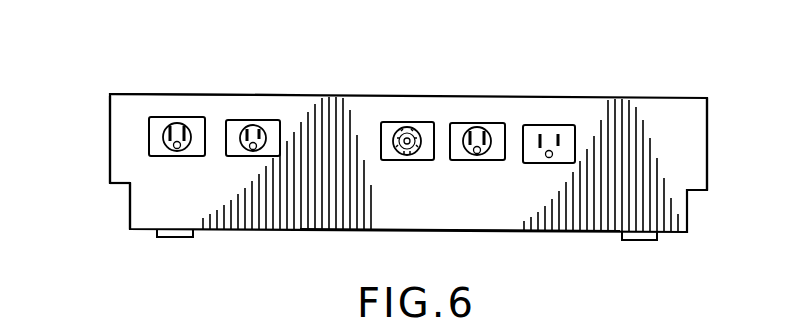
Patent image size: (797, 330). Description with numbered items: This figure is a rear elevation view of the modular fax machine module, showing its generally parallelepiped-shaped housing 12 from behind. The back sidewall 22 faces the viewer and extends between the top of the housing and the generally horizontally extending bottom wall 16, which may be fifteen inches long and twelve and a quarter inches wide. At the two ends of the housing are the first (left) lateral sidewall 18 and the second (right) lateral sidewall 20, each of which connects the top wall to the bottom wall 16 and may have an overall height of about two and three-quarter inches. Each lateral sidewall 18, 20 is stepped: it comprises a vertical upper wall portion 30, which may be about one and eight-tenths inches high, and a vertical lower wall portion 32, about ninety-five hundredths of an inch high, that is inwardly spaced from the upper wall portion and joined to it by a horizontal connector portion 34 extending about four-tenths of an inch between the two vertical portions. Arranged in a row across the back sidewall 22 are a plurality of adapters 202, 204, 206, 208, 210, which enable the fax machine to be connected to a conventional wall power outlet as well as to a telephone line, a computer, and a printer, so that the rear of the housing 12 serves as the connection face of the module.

The housing 12 is at (548, 95).
The bottom wall 16 is at (465, 233).
The first (left) lateral sidewall 18 is at (707, 137).
The second (right) lateral sidewall 20 is at (110, 111).
The back sidewall 22 is at (408, 215).
The vertical upper wall portion 30 is at (110, 143).
The vertical lower wall portion 32 is at (130, 222).
The horizontal connector portion 34 is at (128, 187).
The adapter 202 is at (531, 130).
The adapter 204 is at (455, 128).
The adapter 206 is at (384, 128).
The adapter 208 is at (247, 112).
The adapter 210 is at (165, 118).